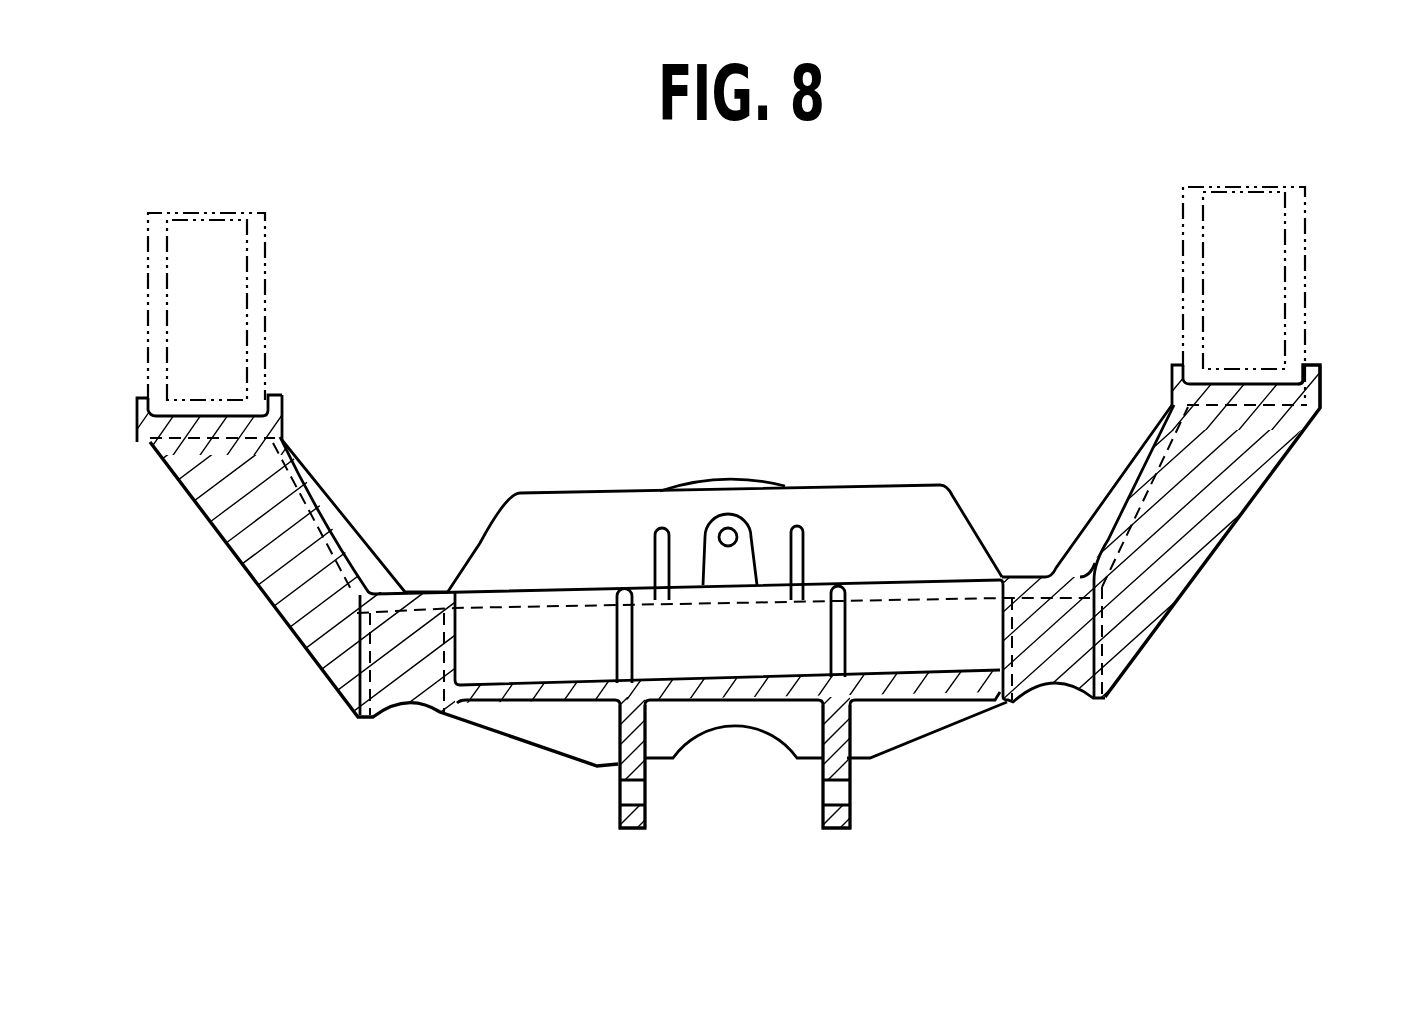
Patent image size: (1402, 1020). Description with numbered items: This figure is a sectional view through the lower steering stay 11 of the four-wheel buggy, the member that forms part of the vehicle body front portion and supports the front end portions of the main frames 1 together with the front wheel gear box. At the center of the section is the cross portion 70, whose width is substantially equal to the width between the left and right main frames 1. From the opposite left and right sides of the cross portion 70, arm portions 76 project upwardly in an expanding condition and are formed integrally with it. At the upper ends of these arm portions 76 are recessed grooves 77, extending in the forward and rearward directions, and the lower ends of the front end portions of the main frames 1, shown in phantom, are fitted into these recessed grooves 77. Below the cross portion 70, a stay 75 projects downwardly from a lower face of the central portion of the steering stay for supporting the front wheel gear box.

The main frame 1 is at (145, 297).
The lower steering stay 11 is at (903, 472).
The cross portion 70 is at (480, 543).
The stay 75 is at (823, 812).
The arm portions 76 is at (223, 540).
The recessed grooves 77 is at (205, 416).